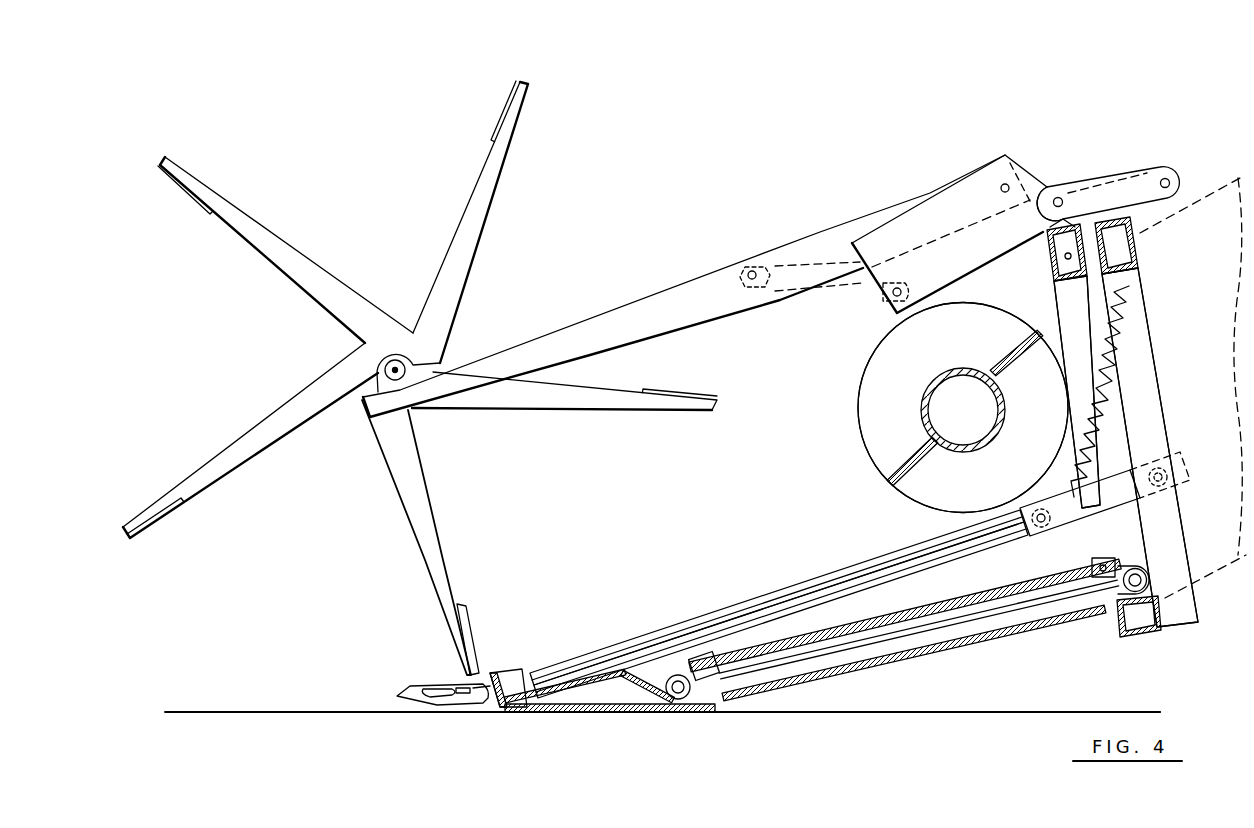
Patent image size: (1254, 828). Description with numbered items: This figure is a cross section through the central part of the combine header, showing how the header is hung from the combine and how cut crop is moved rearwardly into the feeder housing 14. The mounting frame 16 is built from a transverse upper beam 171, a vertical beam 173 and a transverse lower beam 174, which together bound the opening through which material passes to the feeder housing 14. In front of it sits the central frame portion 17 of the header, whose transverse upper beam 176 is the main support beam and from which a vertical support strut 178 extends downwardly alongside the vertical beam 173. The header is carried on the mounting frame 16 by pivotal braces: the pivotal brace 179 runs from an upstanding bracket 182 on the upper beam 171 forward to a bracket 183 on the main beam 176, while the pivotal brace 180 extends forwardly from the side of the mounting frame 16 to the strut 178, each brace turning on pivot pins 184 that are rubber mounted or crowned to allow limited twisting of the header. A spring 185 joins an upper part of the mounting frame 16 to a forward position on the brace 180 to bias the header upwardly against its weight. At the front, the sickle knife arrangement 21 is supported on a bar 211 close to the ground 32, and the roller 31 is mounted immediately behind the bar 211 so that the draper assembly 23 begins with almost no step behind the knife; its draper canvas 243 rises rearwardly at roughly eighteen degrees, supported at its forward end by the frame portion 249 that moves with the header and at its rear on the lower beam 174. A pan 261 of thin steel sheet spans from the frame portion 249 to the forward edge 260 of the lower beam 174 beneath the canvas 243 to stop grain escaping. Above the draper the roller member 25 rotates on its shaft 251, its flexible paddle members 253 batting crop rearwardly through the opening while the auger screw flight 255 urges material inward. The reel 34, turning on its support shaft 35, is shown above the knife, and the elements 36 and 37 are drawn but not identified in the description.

The feeder housing 14 is at (1222, 565).
The mounting frame 16 is at (1162, 380).
The central frame portion 17 is at (1052, 318).
The sickle knife arrangement 21 is at (414, 688).
The draper assembly 23 is at (858, 577).
The roller member 25 is at (830, 426).
The roller 31 is at (722, 623).
The ground 32 is at (1005, 711).
The reel 34 is at (504, 188).
The support shaft 35 is at (392, 370).
The support arm 36 is at (693, 286).
The mounting plate 37 is at (955, 207).
The transverse upper beam 171 is at (1140, 262).
The vertical beam 173 is at (1152, 420).
The transverse lower beam 174 is at (1137, 638).
The transverse upper beam 176 is at (1044, 258).
The vertical support strut 178 is at (1078, 366).
The pivotal brace 179 is at (1102, 194).
The pivotal brace 180 is at (1100, 522).
The upstanding bracket 182 is at (1150, 215).
The bracket 183 is at (1047, 220).
The pivot pins 184 is at (1058, 198).
The spring 185 is at (1126, 340).
The bar 211 is at (488, 680).
The draper canvas 243 is at (948, 606).
The frame portion 249 is at (702, 714).
The shaft 251 is at (985, 448).
The flexible paddle members 253 is at (1005, 360).
The auger screw flight 255 is at (882, 348).
The forward edge 260 is at (1098, 618).
The pan 261 is at (880, 676).